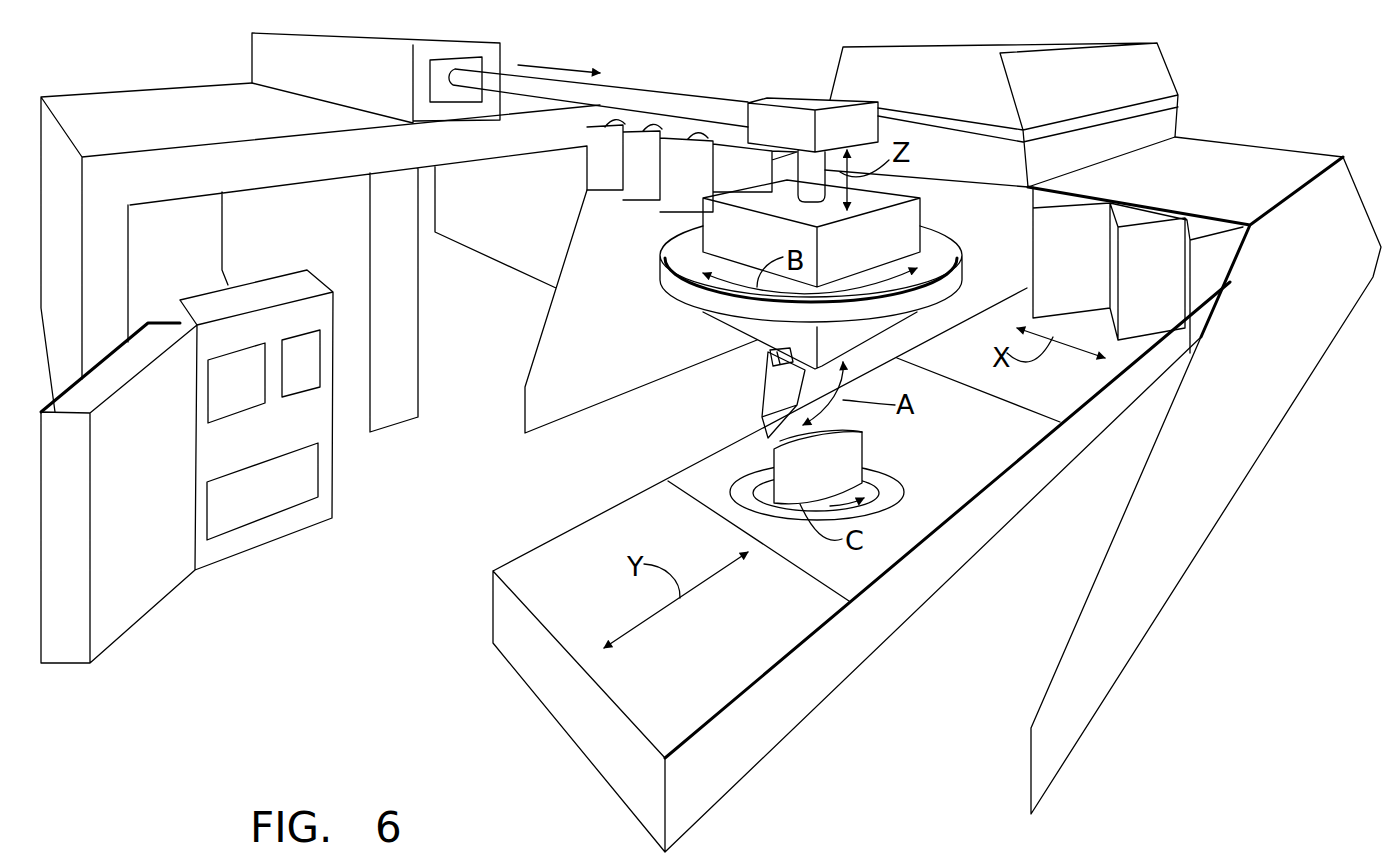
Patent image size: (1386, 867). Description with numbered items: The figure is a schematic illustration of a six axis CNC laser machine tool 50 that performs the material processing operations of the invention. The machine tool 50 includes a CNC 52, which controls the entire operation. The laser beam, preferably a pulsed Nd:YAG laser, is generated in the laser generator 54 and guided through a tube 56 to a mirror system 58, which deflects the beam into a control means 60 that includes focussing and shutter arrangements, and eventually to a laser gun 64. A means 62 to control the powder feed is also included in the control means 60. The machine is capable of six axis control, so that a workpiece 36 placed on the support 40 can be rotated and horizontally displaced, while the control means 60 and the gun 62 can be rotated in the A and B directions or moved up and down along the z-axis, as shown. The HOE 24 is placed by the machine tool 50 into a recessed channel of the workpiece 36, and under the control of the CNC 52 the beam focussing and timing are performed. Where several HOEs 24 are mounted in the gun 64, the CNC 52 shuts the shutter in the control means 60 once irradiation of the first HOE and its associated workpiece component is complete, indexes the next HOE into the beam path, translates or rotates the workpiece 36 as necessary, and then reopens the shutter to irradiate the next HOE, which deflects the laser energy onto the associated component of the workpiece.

The HOE 24 is at (772, 358).
The workpiece 36 is at (842, 458).
The support 40 is at (778, 728).
The six axis CNC laser machine tool 50 is at (481, 516).
The CNC 52 is at (249, 562).
The laser generator 54 is at (331, 80).
The tube 56 is at (657, 90).
The mirror system 58 is at (799, 141).
The control means 60 is at (882, 253).
The means to control the powder feed 62 is at (858, 340).
The laser gun 64 is at (773, 399).